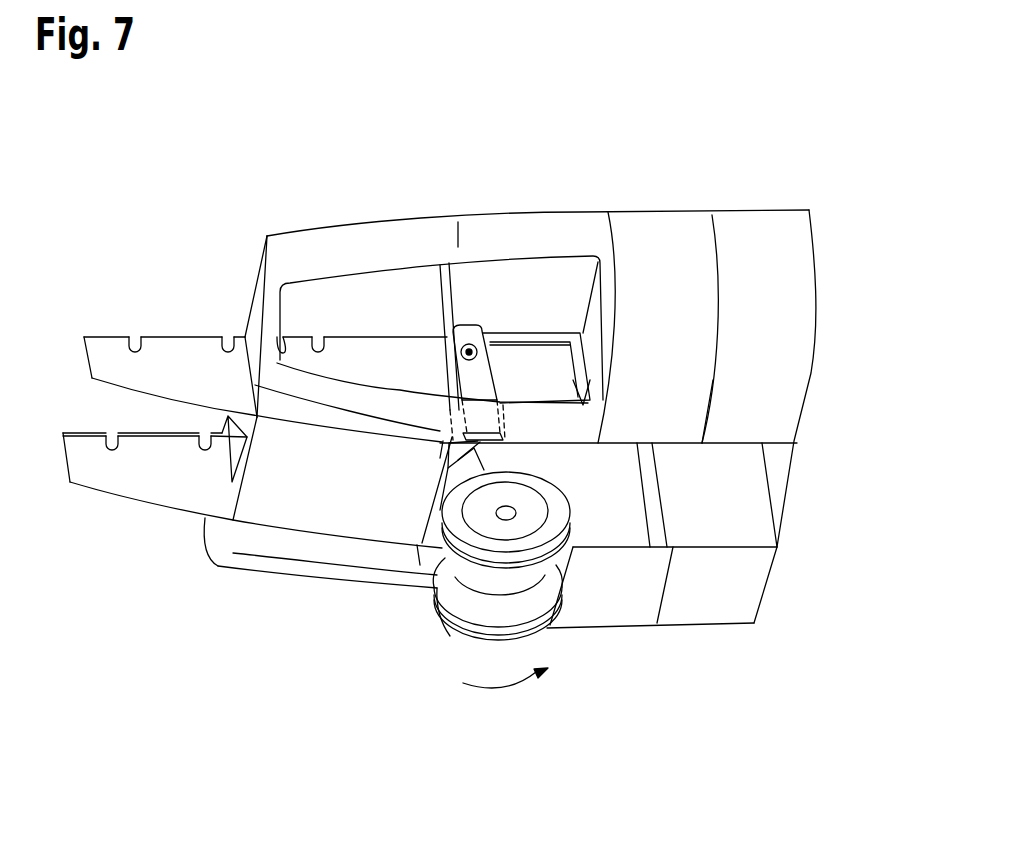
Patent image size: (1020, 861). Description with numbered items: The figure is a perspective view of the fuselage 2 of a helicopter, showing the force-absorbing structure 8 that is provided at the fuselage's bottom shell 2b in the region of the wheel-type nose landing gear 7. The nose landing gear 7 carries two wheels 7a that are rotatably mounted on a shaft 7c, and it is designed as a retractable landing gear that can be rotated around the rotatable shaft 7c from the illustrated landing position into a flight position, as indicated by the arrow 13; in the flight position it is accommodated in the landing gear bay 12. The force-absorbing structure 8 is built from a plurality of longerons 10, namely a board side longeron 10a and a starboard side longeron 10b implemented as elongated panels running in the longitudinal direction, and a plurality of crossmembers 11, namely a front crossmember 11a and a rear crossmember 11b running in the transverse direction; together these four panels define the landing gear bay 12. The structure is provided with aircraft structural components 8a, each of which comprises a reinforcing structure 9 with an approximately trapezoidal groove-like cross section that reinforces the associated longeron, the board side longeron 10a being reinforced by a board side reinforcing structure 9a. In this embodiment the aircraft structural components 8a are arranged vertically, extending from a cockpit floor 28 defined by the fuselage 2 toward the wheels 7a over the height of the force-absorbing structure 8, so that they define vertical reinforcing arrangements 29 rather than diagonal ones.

The fuselage 2 is at (233, 610).
The bottom shell 2b is at (308, 257).
The wheel-type nose landing gear 7 is at (445, 670).
The wheels 7a is at (467, 543).
The shaft 7c is at (458, 352).
The force-absorbing structure 8 is at (112, 297).
The aircraft structural components 8a is at (500, 308).
The reinforcing structure 9 is at (522, 370).
The board side reinforcing structure 9a is at (467, 311).
The plurality of longerons 10 is at (88, 520).
The board side longeron 10a is at (172, 320).
The starboard side longeron 10b is at (142, 520).
The plurality of crossmembers 11 is at (400, 555).
The front crossmember 11a is at (420, 482).
The rear crossmember 11b is at (625, 386).
The landing gear bay 12 is at (600, 482).
The arrow 13 is at (493, 690).
The cockpit floor 28 is at (575, 270).
The vertical reinforcing arrangements 29 is at (470, 388).